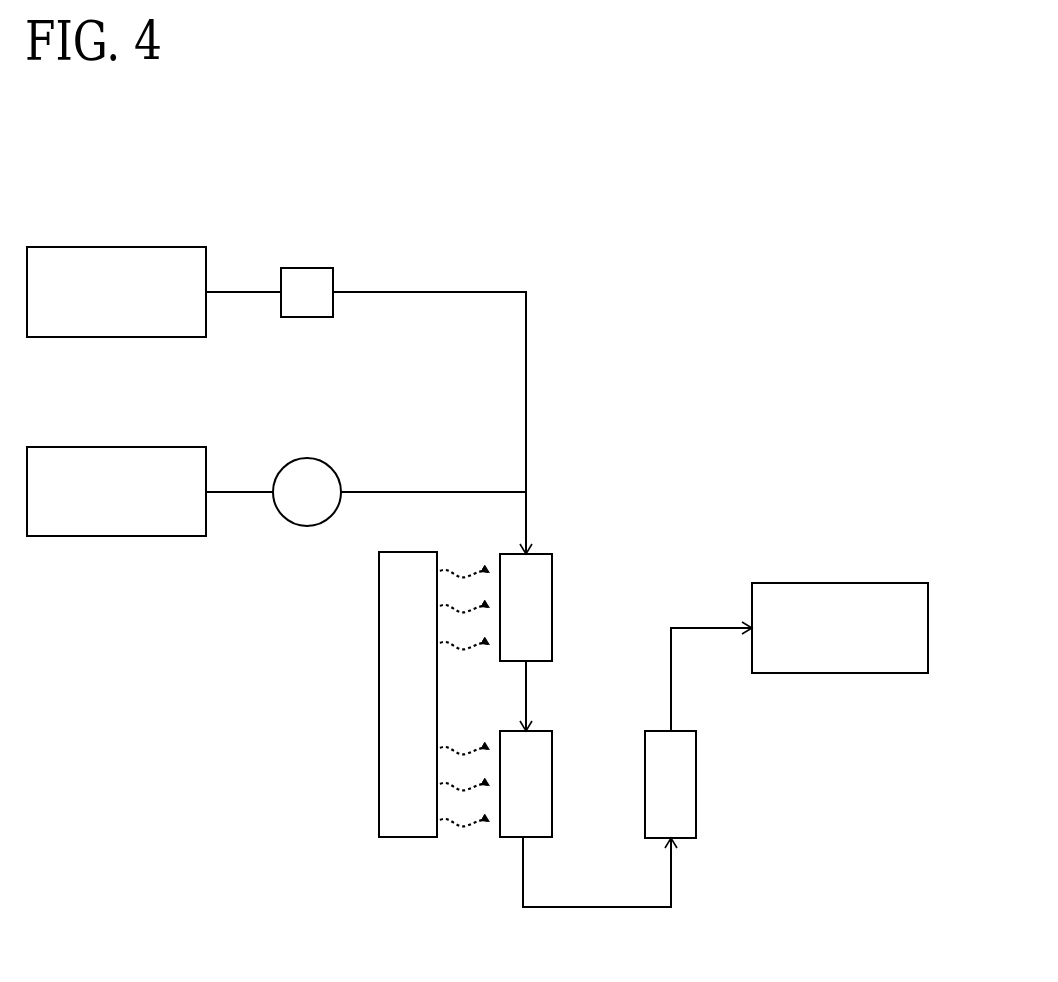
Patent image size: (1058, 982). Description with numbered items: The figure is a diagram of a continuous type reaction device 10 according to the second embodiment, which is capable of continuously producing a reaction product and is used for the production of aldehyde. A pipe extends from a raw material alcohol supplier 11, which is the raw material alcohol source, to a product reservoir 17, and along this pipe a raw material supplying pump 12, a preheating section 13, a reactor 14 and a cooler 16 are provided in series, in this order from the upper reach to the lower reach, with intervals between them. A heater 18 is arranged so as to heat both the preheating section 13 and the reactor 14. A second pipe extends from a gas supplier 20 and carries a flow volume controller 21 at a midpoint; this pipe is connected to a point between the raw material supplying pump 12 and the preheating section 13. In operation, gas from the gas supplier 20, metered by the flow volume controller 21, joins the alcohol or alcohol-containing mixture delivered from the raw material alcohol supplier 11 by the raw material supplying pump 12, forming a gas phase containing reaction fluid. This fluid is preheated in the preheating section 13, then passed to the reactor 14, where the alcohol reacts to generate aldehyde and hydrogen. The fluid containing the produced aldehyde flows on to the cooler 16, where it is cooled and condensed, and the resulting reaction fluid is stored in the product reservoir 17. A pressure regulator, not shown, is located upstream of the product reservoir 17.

The reaction device 10 is at (662, 440).
The raw material alcohol supplier 11 is at (113, 528).
The raw material supplying pump 12 is at (305, 458).
The preheating section 13 is at (540, 600).
The reactor 14 is at (540, 786).
The cooler 16 is at (685, 785).
The product reservoir 17 is at (843, 658).
The heater 18 is at (387, 672).
The gas supplier 20 is at (308, 279).
The flow volume controller 21 is at (117, 262).